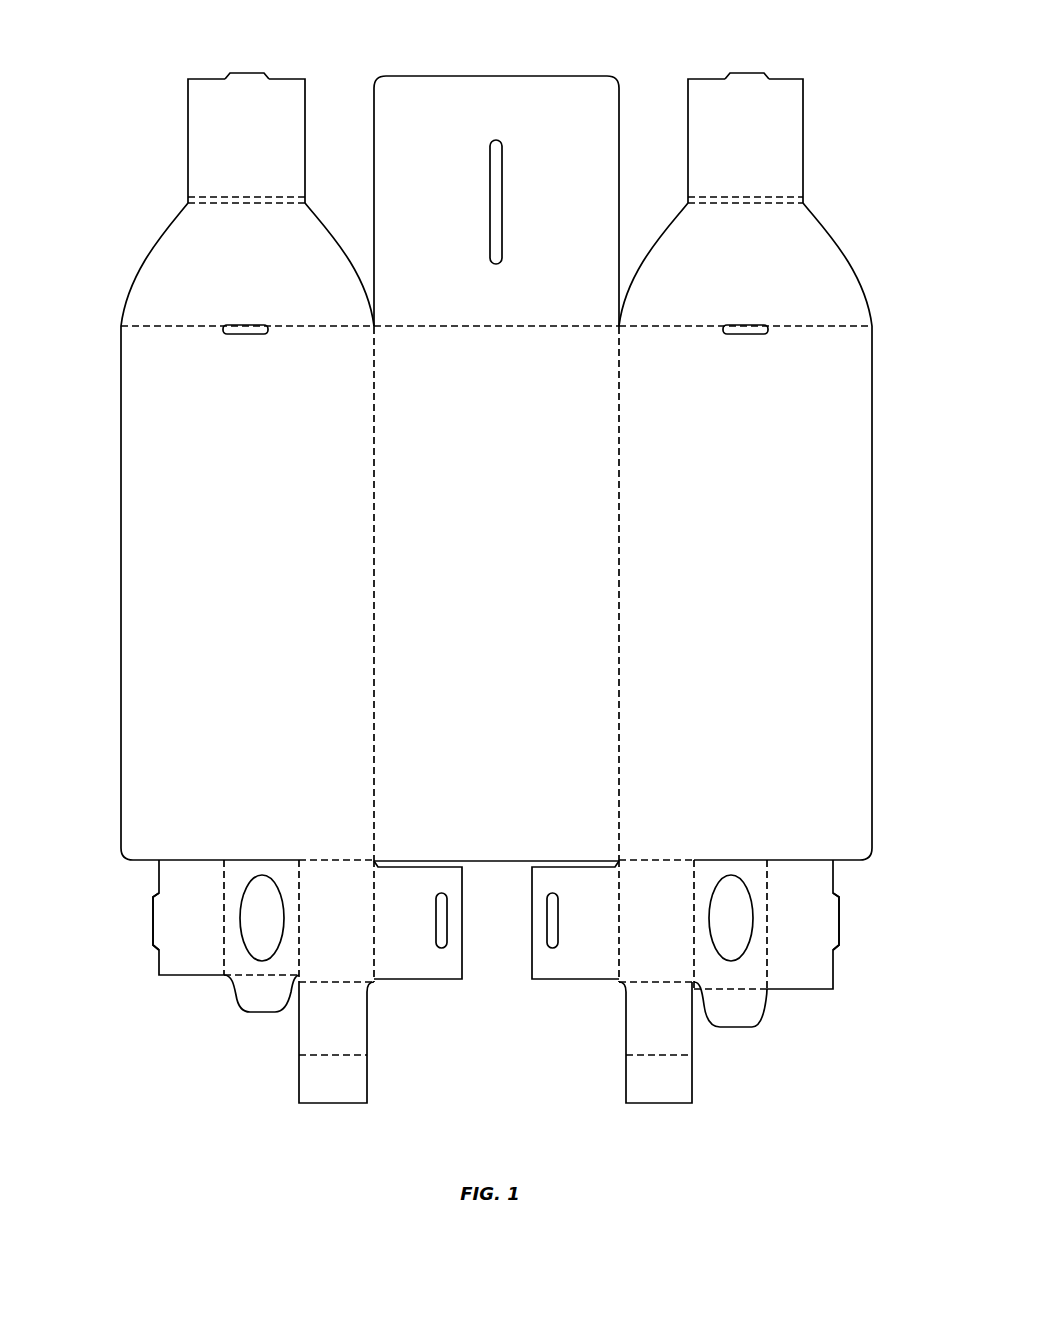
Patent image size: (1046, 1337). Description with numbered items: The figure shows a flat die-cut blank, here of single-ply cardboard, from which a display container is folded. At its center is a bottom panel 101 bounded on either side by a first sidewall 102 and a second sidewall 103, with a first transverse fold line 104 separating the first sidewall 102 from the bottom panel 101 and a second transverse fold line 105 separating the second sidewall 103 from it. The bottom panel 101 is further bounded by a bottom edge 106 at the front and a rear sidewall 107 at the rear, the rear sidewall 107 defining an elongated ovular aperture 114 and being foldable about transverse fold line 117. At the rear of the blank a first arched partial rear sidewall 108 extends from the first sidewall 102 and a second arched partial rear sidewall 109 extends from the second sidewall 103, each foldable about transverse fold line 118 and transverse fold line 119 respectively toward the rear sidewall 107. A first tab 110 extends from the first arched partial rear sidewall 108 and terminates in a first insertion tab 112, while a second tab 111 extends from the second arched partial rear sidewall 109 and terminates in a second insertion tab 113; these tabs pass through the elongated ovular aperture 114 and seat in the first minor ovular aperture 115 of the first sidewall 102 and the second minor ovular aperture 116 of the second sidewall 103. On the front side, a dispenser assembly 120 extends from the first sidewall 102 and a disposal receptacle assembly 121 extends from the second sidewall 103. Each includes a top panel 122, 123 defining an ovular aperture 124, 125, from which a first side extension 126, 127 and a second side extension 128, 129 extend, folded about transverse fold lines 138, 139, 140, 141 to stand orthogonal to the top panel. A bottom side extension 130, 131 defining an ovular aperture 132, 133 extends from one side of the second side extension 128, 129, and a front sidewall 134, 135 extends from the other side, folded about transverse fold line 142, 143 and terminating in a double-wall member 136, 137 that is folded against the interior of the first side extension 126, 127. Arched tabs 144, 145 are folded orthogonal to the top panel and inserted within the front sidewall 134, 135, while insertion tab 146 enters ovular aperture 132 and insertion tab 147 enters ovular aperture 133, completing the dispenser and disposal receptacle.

The bottom panel 101 is at (470, 514).
The first sidewall 102 is at (230, 514).
The second sidewall 103 is at (727, 514).
The first transverse fold line 104 is at (374, 688).
The second transverse fold line 105 is at (620, 707).
The bottom edge 106 is at (493, 861).
The rear sidewall 107 is at (541, 78).
The first arched partial rear sidewall 108 is at (178, 255).
The second arched partial rear sidewall 109 is at (808, 255).
The first tab 110 is at (210, 123).
The second tab 111 is at (775, 122).
The first insertion tab 112 is at (239, 80).
The second insertion tab 113 is at (745, 76).
The elongated ovular aperture 114 is at (503, 195).
The first minor ovular aperture 115 is at (240, 335).
The second minor ovular aperture 116 is at (742, 335).
The transverse fold line 117 is at (522, 326).
The transverse fold line 118 is at (170, 325).
The transverse fold line 119 is at (790, 325).
The dispenser assembly 120 is at (96, 977).
The disposal receptacle assembly 121 is at (918, 977).
The top panel 122 is at (242, 962).
The top panel 123 is at (752, 868).
The aperture 124 is at (263, 875).
The aperture 125 is at (730, 877).
The first side extension 126 is at (180, 962).
The first side extension 127 is at (800, 962).
The second side extension 128 is at (350, 873).
The second side extension 129 is at (640, 927).
The bottom side extension 130 is at (406, 965).
The bottom side extension 131 is at (564, 968).
The ovular aperture 132 is at (436, 913).
The ovular aperture 133 is at (558, 913).
The front sidewall 134 is at (334, 1014).
The front sidewall 135 is at (638, 1018).
The double-wall member 136 is at (333, 1090).
The double-wall member 137 is at (655, 1090).
The transverse fold line 138 is at (223, 912).
The transverse fold line 139 is at (767, 918).
The transverse fold line 140 is at (299, 927).
The transverse fold line 141 is at (693, 912).
The transverse fold line 142 is at (318, 980).
The transverse fold line 143 is at (640, 982).
The arched tab 144 is at (268, 1002).
The arched tab 145 is at (730, 1015).
The insertion tab 146 is at (153, 918).
The insertion tab 147 is at (839, 928).